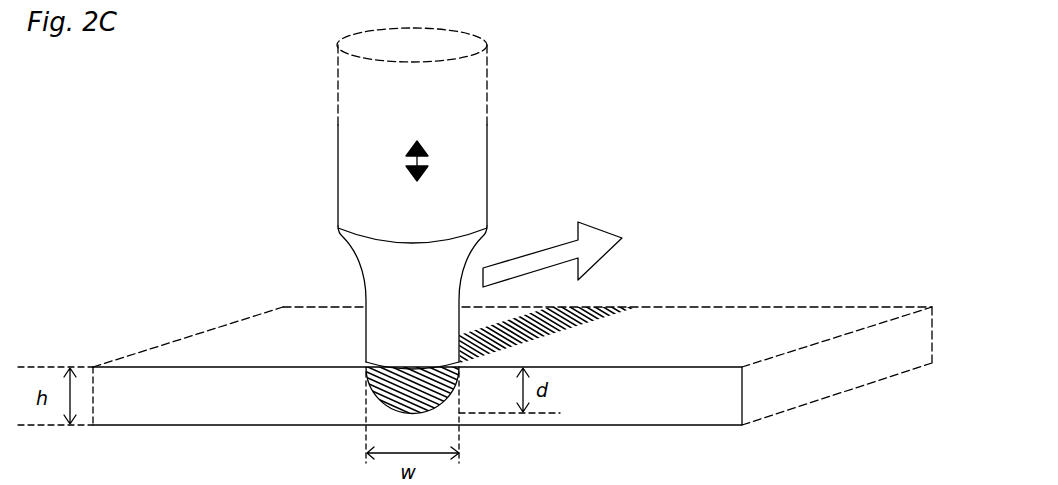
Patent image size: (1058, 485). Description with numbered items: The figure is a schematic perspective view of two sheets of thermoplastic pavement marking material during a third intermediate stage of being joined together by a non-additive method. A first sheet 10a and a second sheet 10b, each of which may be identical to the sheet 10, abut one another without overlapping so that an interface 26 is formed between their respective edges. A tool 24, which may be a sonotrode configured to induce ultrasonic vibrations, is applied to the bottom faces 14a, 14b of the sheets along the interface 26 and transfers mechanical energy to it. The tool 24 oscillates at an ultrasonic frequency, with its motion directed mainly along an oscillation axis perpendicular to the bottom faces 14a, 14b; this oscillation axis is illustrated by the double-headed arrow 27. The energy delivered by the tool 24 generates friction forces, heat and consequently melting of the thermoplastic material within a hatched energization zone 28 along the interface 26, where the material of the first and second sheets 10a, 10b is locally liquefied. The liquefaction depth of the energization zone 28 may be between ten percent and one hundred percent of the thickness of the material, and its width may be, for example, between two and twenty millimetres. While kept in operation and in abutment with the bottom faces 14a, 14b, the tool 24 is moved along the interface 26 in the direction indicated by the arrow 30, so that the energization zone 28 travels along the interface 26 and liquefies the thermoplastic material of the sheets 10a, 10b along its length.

The sheet 10 is at (512, 323).
The first sheet 10a is at (297, 252).
The second sheet 10b is at (798, 236).
The bottom face 14a is at (270, 338).
The bottom face 14b is at (684, 323).
The tool 24 is at (320, 200).
The interface 26 is at (417, 413).
The double-headed arrow 27 is at (420, 163).
The energization zone 28 is at (394, 388).
The arrow 30 is at (597, 238).